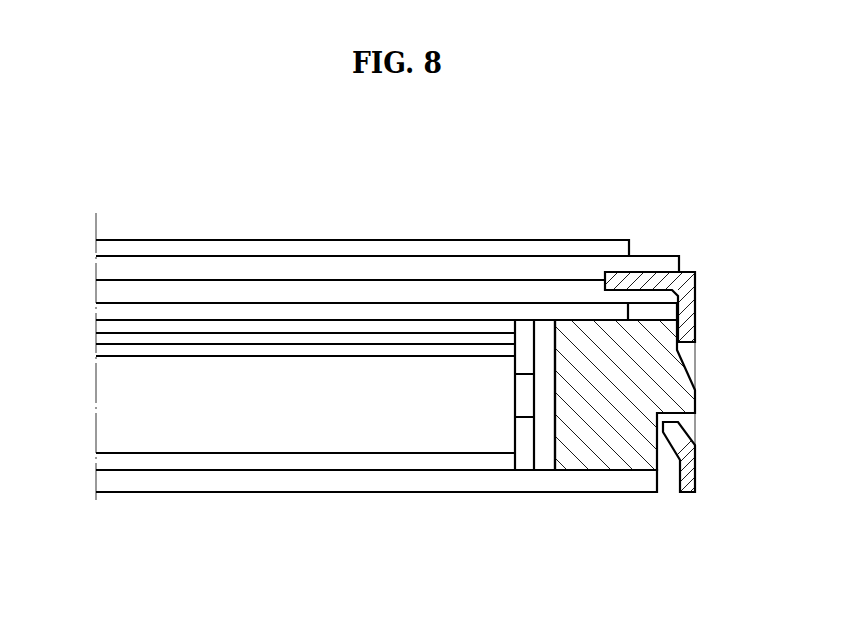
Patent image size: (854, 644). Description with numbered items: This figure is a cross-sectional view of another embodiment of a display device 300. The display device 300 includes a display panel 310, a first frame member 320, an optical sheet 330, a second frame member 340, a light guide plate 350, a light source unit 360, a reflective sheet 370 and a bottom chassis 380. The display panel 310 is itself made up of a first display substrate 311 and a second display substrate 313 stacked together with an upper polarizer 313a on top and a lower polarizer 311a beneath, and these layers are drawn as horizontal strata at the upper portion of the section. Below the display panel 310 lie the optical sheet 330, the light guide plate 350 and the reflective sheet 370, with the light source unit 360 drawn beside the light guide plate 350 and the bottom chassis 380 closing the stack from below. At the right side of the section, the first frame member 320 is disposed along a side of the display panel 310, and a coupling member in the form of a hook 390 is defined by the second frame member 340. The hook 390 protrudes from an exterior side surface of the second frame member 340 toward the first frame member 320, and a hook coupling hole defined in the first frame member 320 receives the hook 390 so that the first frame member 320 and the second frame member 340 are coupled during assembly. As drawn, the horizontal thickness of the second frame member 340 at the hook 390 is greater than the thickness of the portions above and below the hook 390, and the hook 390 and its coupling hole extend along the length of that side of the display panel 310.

The display device 300 is at (131, 193).
The display panel 310 is at (428, 193).
The upper polarizer 313a is at (281, 250).
The second display substrate 313 is at (347, 270).
The first display substrate 311 is at (427, 297).
The lower polarizer 311a is at (495, 316).
The first frame member 320 is at (688, 313).
The optical sheet 330 is at (92, 317).
The second frame member 340 is at (685, 457).
The light guide plate 350 is at (135, 410).
The light source module 360 is at (525, 402).
The reflective sheet 370 is at (130, 460).
The bottom chassis 380 is at (385, 480).
The hook 390 is at (683, 380).